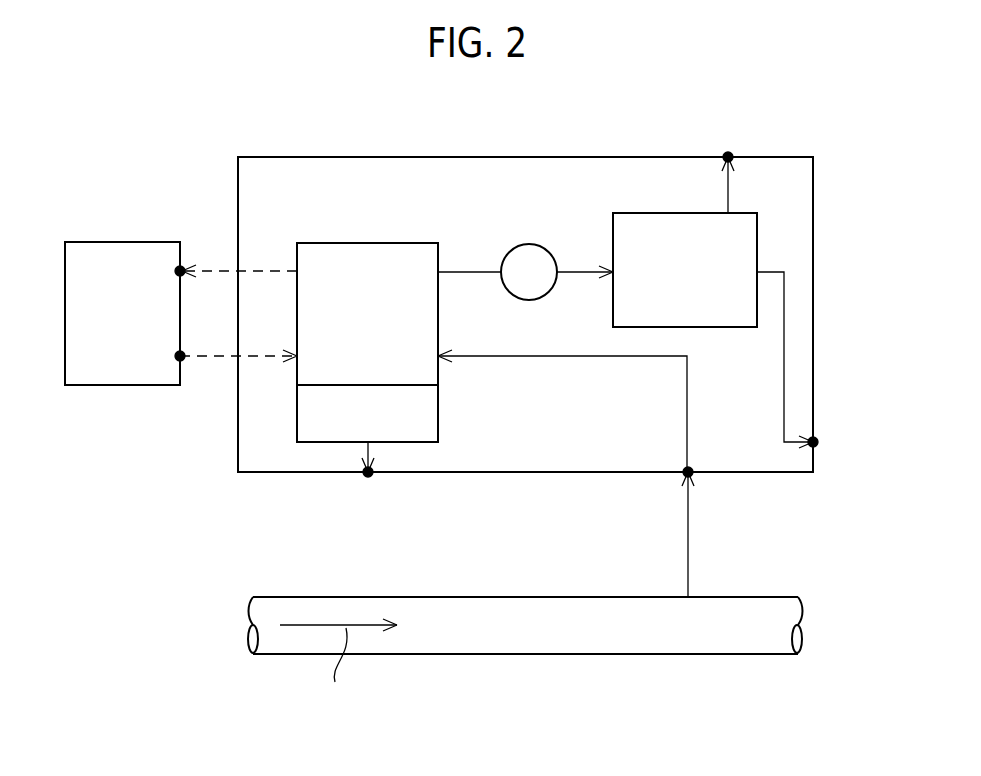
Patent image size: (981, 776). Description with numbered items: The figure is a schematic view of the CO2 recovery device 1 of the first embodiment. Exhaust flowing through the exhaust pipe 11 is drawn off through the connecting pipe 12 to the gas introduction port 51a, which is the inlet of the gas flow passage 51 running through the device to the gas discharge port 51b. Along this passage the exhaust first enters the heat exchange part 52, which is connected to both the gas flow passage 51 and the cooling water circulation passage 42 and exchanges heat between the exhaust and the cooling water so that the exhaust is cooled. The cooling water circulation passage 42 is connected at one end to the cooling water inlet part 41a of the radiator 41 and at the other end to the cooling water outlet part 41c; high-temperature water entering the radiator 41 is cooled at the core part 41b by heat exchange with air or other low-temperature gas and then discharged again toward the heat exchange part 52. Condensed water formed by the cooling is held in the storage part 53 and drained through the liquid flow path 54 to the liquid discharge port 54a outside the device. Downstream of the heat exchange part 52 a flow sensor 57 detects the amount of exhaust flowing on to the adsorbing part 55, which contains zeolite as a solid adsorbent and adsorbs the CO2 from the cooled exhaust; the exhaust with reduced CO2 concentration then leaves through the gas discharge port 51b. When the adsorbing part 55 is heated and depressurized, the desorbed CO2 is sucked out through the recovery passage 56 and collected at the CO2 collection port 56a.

The CO2 recovery device 1 is at (345, 157).
The exhaust pipe 11 is at (544, 657).
The connecting pipe 12 is at (686, 505).
The radiator 41 is at (100, 242).
The cooling water inlet part 41a is at (182, 266).
The core part 41b is at (127, 241).
The cooling water outlet part 41c is at (181, 361).
The cooling water circulation passage 42 is at (270, 268).
The gas flow passage 51 is at (473, 270).
The gas introduction port 51a is at (693, 476).
The gas discharge port 51b is at (815, 442).
The heat exchange part 52 is at (405, 242).
The storage part 53 is at (440, 422).
The liquid flow path 54 is at (371, 446).
The liquid discharge port 54a is at (366, 480).
The adsorbing part 55 is at (745, 329).
The recovery passage 56 is at (726, 202).
The CO2 collection port 56a is at (730, 152).
The flow sensor 57 is at (537, 245).